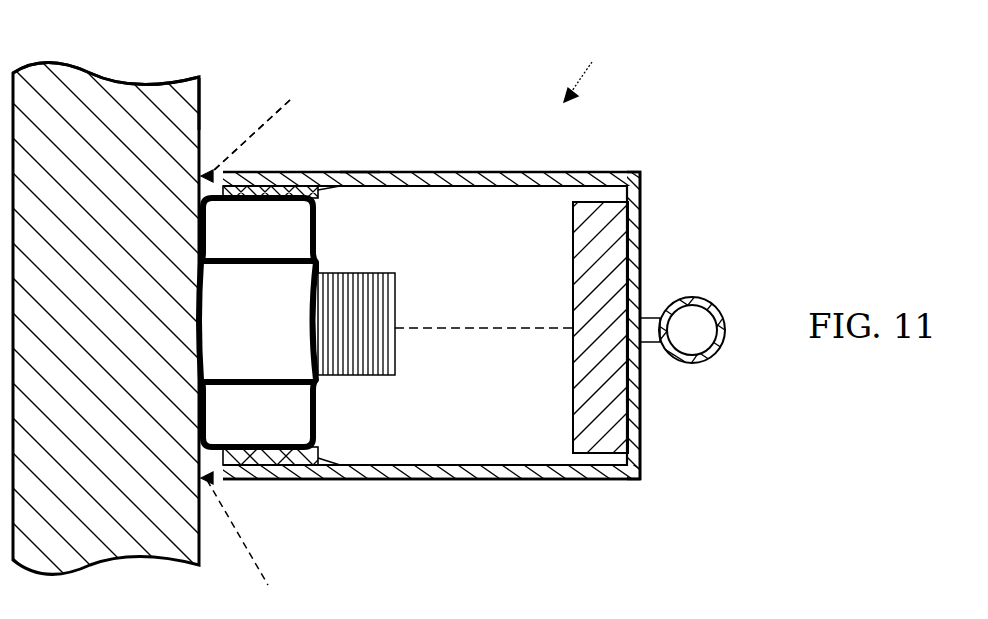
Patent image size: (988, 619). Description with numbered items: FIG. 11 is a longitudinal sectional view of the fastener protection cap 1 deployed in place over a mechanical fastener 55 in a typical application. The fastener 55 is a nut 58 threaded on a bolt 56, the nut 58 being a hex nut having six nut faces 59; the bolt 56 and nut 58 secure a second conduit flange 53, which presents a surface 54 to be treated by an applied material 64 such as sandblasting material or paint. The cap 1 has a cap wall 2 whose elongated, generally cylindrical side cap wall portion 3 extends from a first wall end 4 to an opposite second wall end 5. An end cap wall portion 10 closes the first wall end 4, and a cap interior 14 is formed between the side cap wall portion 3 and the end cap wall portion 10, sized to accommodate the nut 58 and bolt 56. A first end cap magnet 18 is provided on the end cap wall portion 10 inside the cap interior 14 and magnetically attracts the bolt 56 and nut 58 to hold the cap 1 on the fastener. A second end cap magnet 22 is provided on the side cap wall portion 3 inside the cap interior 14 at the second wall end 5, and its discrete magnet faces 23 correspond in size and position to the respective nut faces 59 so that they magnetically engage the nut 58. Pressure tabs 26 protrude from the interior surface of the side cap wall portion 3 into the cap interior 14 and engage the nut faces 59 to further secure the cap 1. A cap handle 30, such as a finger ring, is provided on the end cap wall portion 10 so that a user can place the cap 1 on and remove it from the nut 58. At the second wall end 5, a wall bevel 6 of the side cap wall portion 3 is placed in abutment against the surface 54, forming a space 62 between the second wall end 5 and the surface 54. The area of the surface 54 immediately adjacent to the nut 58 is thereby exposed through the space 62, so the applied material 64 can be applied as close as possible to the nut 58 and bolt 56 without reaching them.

The fastener protection cap 1 is at (584, 74).
The cap wall 2 is at (424, 168).
The side cap wall portion 3 is at (360, 172).
The first wall end 4 is at (641, 172).
The second wall end 5 is at (199, 176).
The wall bevel 6 is at (206, 310).
The end cap wall portion 10 is at (642, 216).
The cap interior 14 is at (498, 400).
The first end cap magnet 18 is at (573, 268).
The second end cap magnet 22 is at (258, 172).
The magnet face 23 is at (279, 192).
The pressure tab 26 is at (322, 190).
The cap handle 30 is at (716, 306).
The second conduit flange 53 is at (204, 96).
The surface to be treated 54 is at (201, 78).
The mechanical fastener 55 is at (199, 182).
The bolt 56 is at (398, 292).
The nut 58 is at (332, 264).
The nut face 59 is at (238, 192).
The space 62 is at (204, 128).
The applied material 64 is at (290, 100).